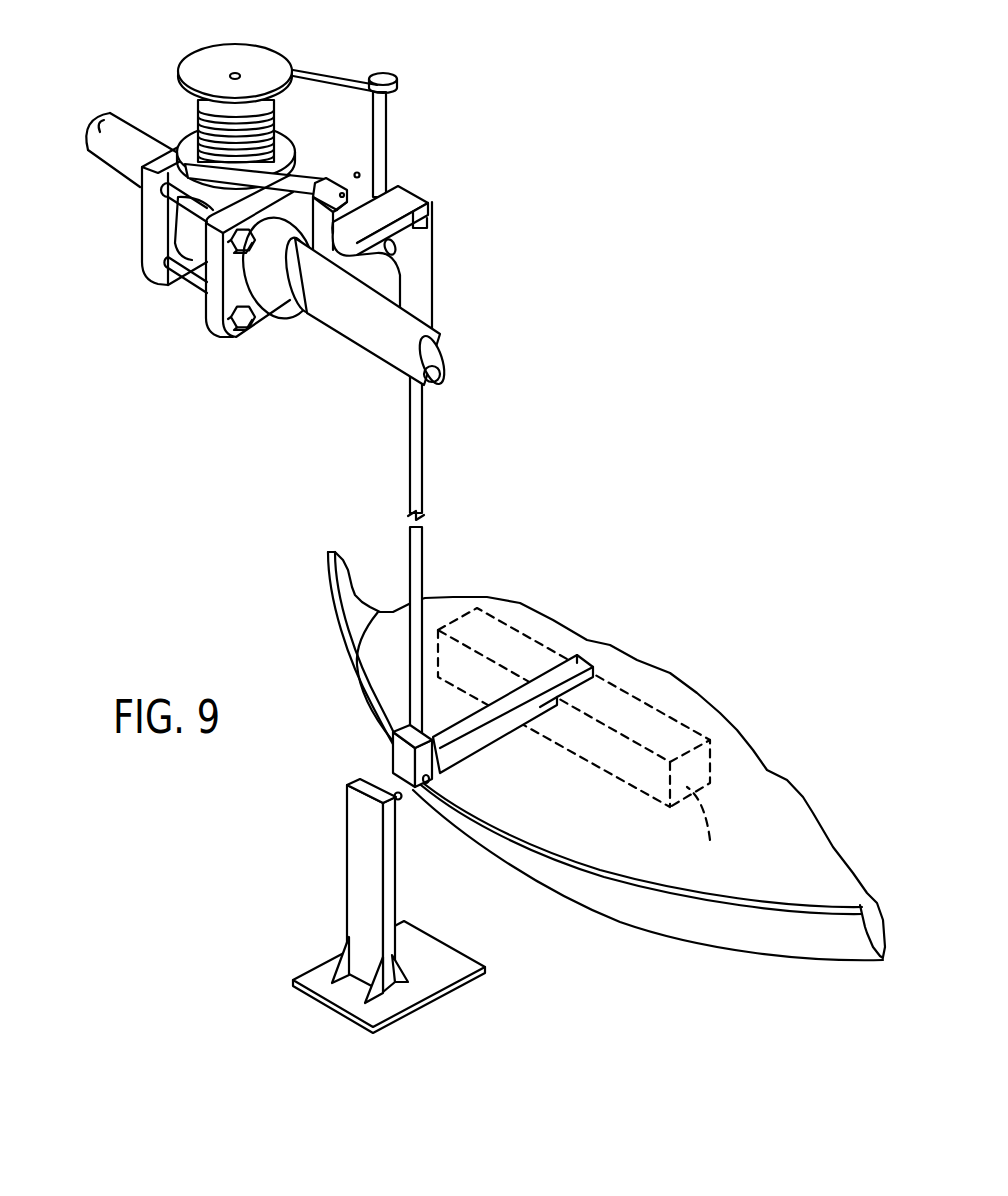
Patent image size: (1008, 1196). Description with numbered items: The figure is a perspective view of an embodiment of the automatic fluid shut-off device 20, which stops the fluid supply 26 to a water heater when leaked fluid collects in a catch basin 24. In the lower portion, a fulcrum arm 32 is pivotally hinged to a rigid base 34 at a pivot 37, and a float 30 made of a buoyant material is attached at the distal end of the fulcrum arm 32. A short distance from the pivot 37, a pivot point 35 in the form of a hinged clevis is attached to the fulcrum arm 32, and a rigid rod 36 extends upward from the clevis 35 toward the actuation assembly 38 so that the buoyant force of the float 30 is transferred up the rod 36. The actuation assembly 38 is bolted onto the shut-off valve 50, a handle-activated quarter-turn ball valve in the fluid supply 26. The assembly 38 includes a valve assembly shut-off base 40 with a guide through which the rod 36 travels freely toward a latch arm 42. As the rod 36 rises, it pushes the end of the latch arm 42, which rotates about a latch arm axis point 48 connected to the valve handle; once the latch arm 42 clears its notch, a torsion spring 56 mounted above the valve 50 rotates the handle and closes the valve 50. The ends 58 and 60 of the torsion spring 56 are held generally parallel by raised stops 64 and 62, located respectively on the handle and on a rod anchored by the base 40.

The automatic fluid shut-off device 20 is at (287, 207).
The catch basin 24 is at (353, 618).
The fluid supply 26 is at (426, 338).
The float 30 is at (584, 740).
The fulcrum arm 32 is at (483, 743).
The base 34 is at (363, 900).
The pivot point 35 is at (393, 760).
The rod 36 is at (410, 397).
The pivot 37 is at (398, 798).
The actuation assembly 38 is at (148, 286).
The valve assembly shut-off base 40 is at (418, 288).
The latch arm 42 is at (423, 213).
The latch arm axis point 48 is at (358, 245).
The shut-off valve 50 is at (138, 227).
The torsion spring 56 is at (192, 147).
The end of torsion spring 58 is at (318, 73).
The end of torsion spring 60 is at (298, 170).
The raised stop 62 is at (383, 143).
The raised stop 64 is at (356, 172).